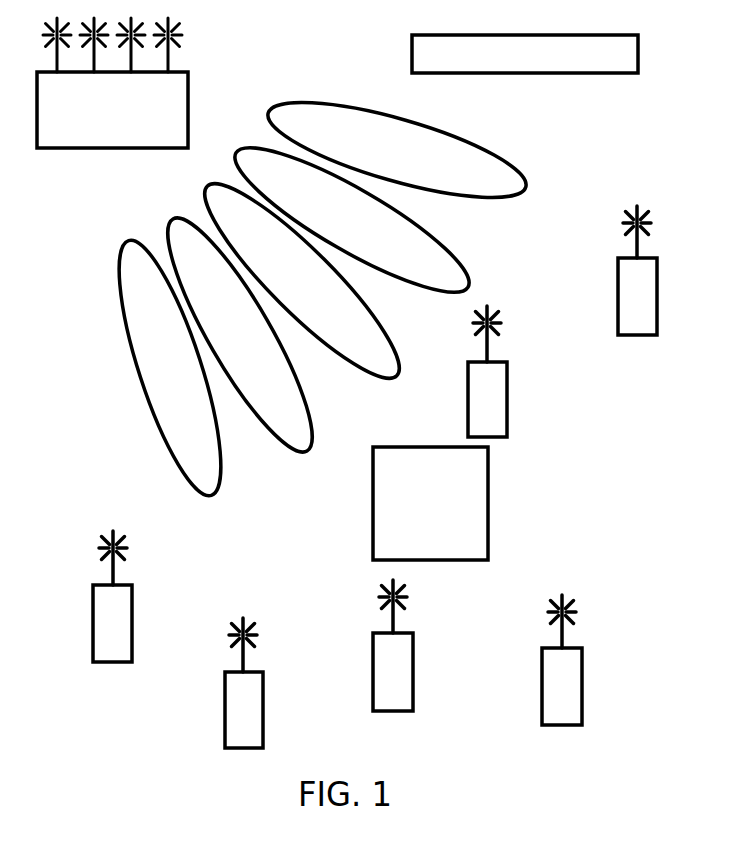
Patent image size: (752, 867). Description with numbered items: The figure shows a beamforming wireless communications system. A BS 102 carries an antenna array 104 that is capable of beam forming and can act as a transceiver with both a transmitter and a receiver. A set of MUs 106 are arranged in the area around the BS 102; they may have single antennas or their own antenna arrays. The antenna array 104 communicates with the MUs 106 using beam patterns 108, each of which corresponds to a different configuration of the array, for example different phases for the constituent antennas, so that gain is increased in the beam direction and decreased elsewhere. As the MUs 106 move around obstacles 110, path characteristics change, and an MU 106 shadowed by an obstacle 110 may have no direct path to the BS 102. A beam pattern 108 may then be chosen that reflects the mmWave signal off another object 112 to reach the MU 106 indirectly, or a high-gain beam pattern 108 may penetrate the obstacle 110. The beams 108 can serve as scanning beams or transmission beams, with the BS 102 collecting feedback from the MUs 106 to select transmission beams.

The BS 102 is at (133, 141).
The antenna array 104 is at (185, 35).
The MUs 106 is at (507, 402).
The beam patterns 108 is at (213, 490).
The obstacles 110 is at (488, 523).
The object 112 is at (595, 73).